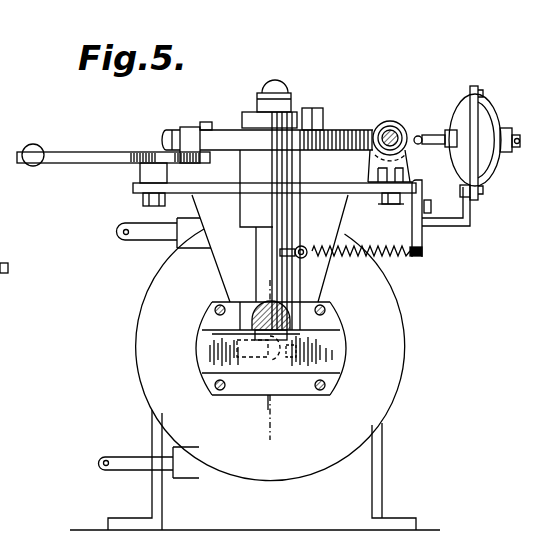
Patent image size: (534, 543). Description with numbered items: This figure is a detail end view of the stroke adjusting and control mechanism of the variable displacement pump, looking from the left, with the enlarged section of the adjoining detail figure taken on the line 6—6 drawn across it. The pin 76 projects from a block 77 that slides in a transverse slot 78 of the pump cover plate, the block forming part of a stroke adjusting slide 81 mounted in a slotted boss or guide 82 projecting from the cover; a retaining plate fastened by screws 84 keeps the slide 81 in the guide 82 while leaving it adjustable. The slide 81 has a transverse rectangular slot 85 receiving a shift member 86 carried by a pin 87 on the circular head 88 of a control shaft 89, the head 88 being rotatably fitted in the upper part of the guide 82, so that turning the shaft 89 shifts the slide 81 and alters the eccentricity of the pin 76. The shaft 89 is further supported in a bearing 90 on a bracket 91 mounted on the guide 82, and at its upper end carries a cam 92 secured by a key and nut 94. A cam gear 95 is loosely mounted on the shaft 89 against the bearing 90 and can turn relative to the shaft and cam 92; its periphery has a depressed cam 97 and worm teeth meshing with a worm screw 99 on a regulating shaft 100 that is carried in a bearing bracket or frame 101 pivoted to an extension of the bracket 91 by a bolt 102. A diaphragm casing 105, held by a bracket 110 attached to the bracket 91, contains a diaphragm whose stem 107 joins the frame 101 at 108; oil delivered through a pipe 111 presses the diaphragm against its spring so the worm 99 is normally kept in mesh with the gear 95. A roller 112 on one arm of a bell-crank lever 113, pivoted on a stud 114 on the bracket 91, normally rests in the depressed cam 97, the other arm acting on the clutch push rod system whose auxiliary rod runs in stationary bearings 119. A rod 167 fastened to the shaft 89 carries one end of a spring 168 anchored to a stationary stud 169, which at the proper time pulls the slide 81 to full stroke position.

The section line 6— 6 is at (263, 438).
The pin 76 is at (214, 355).
The block 77 is at (331, 360).
The transverse slot 78 is at (321, 342).
The stroke adjusting slide 81 is at (332, 352).
The slotted boss or guide 82 is at (295, 390).
The screws 84 is at (327, 389).
The transverse rectangular slot 85 is at (212, 335).
The shift member 86 is at (258, 390).
The pin 87 is at (281, 308).
The circular head 88 is at (248, 302).
The control shaft 89 is at (256, 250).
The bearing 90 is at (297, 192).
The bracket 91 is at (232, 190).
The cam 92 is at (246, 120).
The nut 94 is at (284, 90).
The cam gear 95 is at (357, 130).
The depressed cam 97 is at (204, 126).
The worm screw 99 is at (416, 136).
The regulating shaft 100 is at (391, 138).
The bearing bracket or frame 101 is at (403, 157).
The bolt 102 is at (383, 201).
The diaphragm casing 105 is at (492, 166).
The stem 107 is at (460, 190).
The connection 108 is at (449, 108).
The bracket 110 is at (457, 223).
The pipe 111 is at (512, 127).
The roller 112 is at (188, 128).
The bell-crank lever 113 is at (96, 153).
The stud 114 is at (142, 200).
The stationary bearings 119 is at (16, 257).
The rod 167 is at (306, 244).
The spring 168 is at (410, 257).
The stationary stud 169 is at (422, 247).